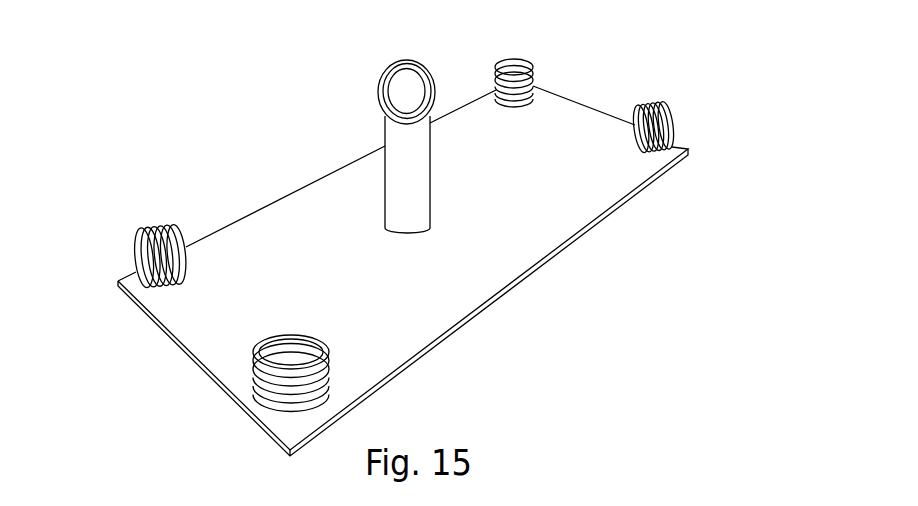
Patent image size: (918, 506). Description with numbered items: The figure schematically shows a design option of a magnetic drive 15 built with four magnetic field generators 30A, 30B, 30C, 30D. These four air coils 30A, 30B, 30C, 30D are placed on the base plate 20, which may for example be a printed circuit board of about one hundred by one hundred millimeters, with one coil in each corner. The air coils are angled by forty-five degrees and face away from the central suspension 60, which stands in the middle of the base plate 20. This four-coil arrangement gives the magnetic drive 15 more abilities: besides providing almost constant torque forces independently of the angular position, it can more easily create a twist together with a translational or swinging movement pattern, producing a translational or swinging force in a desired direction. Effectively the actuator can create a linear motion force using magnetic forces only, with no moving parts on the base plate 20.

The magnetic drive 15 is at (188, 97).
The base plate 20 is at (545, 217).
The magnetic field generator 30A is at (160, 227).
The magnetic field generator 30B is at (523, 58).
The magnetic field generator 30C is at (253, 357).
The magnetic field generator 30D is at (668, 102).
The central suspension 60 is at (395, 175).